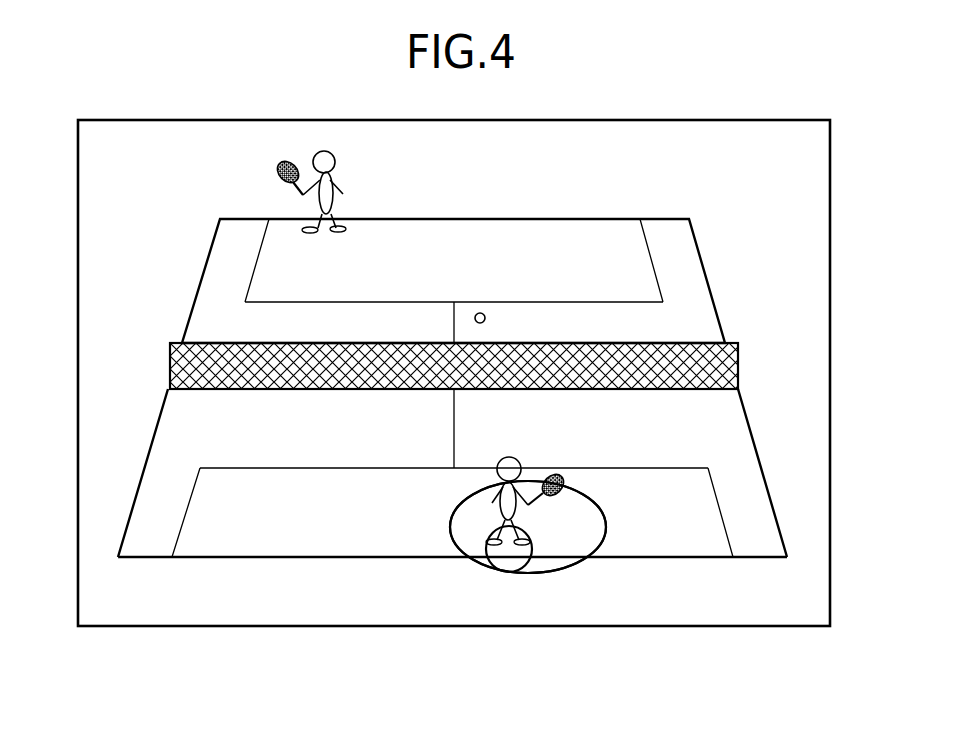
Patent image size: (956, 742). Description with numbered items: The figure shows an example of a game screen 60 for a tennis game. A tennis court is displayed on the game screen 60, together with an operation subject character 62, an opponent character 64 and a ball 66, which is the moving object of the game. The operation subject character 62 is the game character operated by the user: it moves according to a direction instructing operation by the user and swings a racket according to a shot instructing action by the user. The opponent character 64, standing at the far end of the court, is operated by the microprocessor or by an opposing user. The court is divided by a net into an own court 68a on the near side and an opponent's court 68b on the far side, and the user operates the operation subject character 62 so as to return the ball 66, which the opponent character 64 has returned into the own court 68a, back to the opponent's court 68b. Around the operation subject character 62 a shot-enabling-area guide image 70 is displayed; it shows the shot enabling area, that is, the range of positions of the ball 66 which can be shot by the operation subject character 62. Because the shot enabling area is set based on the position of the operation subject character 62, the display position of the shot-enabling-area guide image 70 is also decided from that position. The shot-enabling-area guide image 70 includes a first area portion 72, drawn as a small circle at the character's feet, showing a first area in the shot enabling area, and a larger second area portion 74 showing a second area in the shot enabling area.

The game screen 60 is at (705, 627).
The operation subject character 62 is at (515, 460).
The opponent character 64 is at (336, 160).
The ball 66 is at (486, 318).
The own court 68a is at (680, 433).
The opponent's court 68b is at (554, 237).
The shot-enabling-area guide image 70 is at (569, 566).
The first area portion 72 is at (508, 566).
The second area portion 74 is at (598, 527).